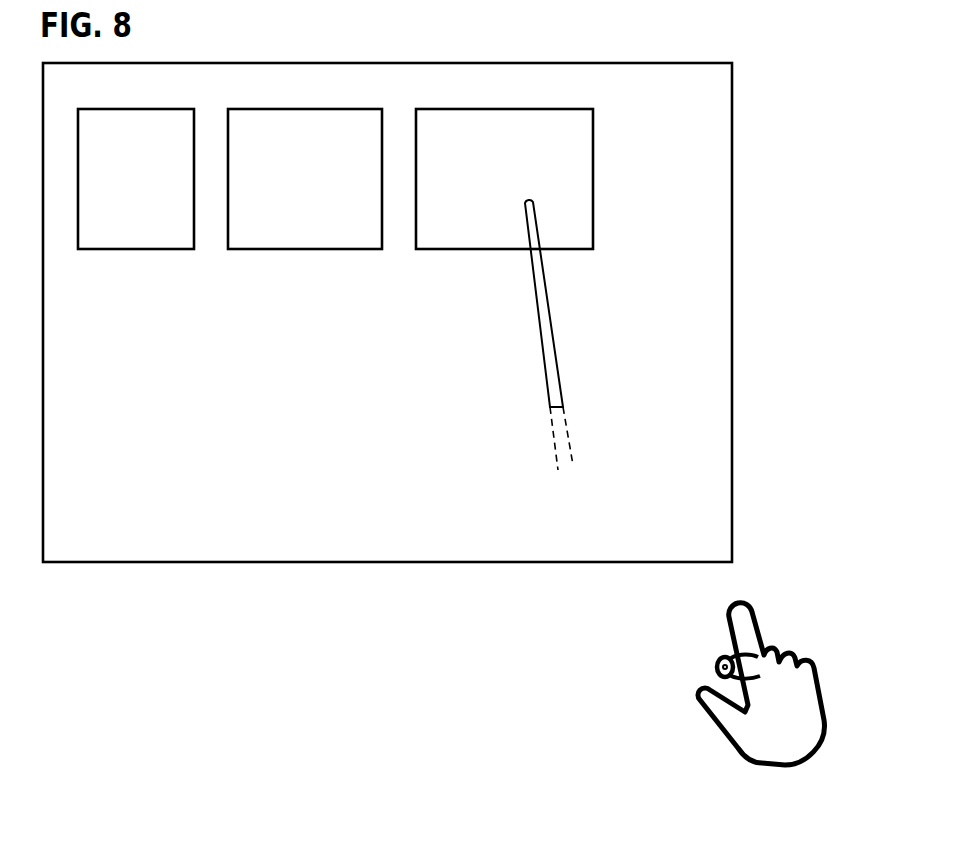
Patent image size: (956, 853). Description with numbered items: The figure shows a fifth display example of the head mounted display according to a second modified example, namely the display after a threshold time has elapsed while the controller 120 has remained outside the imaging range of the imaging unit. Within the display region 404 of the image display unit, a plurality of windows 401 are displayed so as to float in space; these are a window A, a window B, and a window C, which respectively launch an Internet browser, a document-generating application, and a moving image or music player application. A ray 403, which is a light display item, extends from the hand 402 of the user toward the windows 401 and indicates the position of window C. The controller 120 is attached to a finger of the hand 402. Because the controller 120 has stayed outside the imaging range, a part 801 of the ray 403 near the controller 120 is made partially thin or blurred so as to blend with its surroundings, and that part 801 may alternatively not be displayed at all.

The display region 404 is at (728, 483).
The windows 401 is at (100, 250).
The ray 403 is at (557, 350).
The part of the ray 801 is at (570, 440).
The hand 402 is at (727, 740).
The controller 120 is at (716, 653).